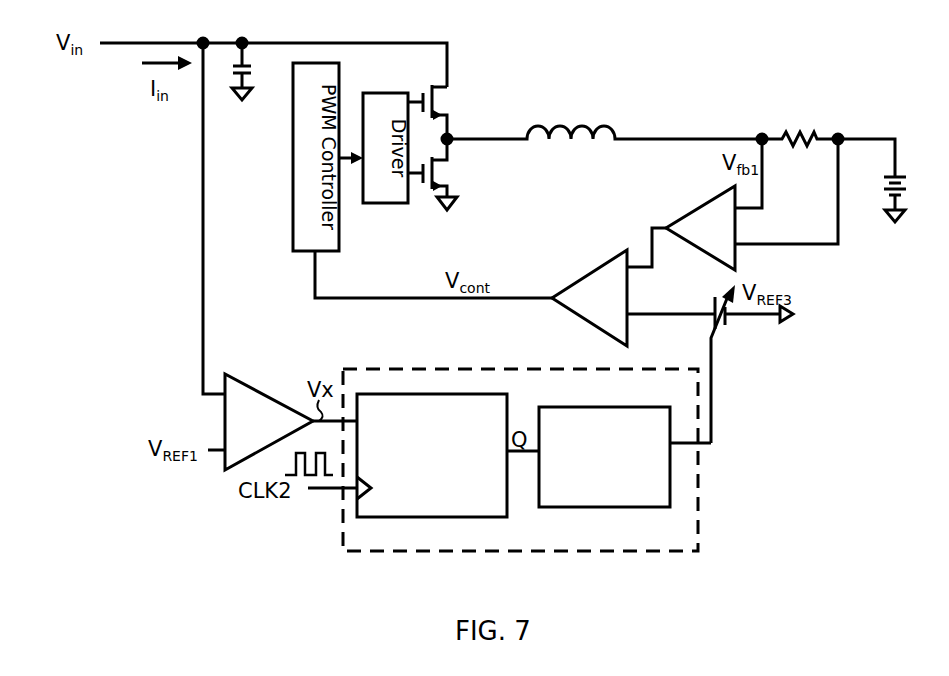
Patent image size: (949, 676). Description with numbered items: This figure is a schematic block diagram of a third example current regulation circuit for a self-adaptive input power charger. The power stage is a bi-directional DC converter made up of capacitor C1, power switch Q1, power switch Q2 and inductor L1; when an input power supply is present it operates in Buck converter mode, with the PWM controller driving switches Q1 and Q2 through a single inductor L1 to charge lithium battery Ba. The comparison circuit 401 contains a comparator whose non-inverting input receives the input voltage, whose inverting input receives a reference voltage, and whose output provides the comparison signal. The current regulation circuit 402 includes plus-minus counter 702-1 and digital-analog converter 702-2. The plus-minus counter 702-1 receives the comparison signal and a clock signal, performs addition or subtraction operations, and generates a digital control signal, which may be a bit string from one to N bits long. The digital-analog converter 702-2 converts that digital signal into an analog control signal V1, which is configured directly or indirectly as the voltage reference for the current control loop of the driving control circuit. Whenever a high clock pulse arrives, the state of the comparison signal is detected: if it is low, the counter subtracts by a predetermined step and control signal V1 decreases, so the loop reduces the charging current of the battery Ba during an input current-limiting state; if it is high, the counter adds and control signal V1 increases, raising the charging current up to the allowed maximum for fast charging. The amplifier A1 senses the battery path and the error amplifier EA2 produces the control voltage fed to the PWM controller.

The comparison circuit 401 is at (242, 381).
The current regulation circuit 402 is at (520, 460).
The plus-minus counter 702-1 is at (432, 455).
The digital-analog converter 702-2 is at (604, 457).
The power switch Q1 is at (446, 112).
The power switch Q2 is at (446, 174).
The inductor L1 is at (610, 117).
The capacitor C1 is at (258, 71).
The lithium battery Ba is at (910, 196).
The amplifier A1 is at (732, 204).
The error amplifier EA2 is at (589, 298).
The control signal V1 is at (703, 447).